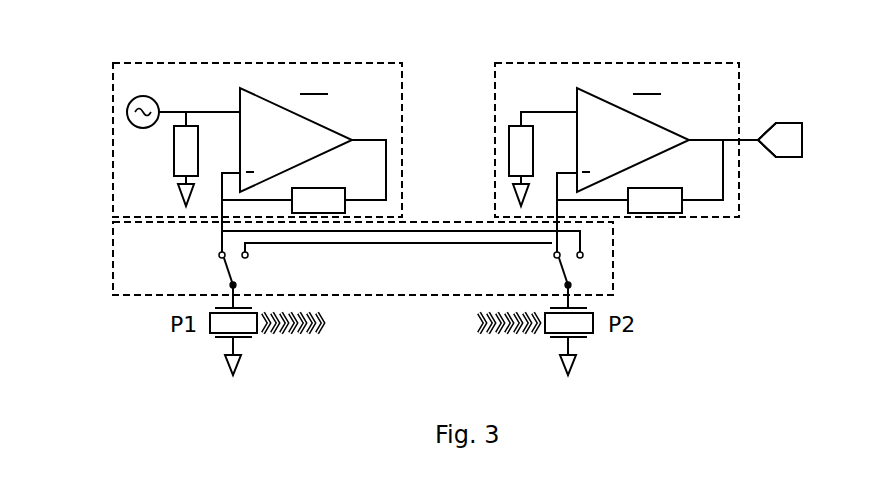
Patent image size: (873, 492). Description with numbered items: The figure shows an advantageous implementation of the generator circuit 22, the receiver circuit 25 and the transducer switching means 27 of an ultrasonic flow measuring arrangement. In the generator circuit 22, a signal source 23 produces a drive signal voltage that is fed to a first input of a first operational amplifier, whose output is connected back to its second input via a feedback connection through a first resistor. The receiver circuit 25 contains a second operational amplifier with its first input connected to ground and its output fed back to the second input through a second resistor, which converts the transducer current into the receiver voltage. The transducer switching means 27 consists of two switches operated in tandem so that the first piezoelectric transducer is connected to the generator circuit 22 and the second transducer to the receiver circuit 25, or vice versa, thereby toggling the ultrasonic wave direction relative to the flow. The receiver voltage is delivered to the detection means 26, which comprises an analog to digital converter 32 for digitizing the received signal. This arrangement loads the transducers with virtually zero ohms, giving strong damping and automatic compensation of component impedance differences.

The generator circuit 22 is at (110, 145).
The signal source 23 is at (155, 93).
The receiver circuit 25 is at (742, 90).
The detection means 26 is at (793, 160).
The analog to digital converter 32 is at (810, 175).
The transducer switching means 27 is at (110, 296).